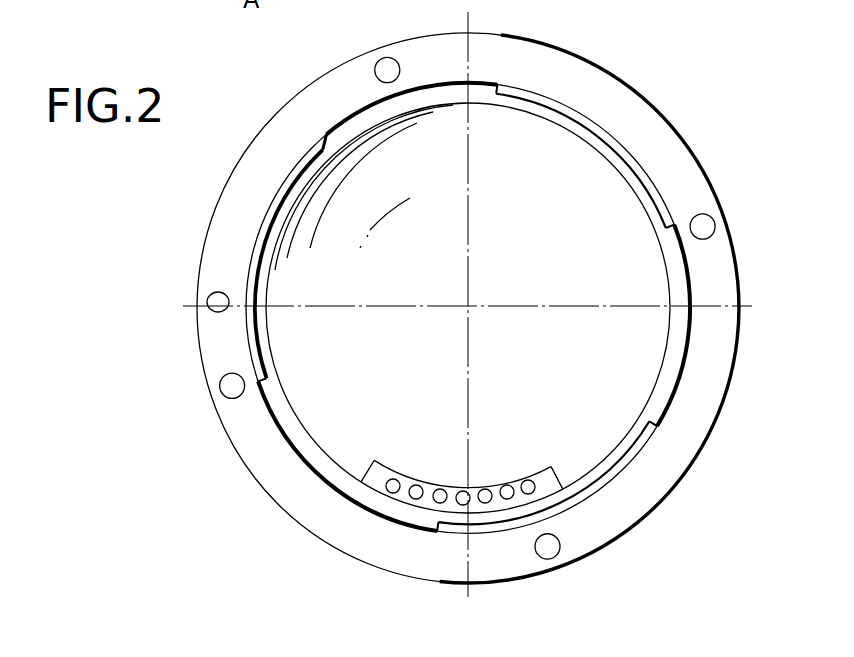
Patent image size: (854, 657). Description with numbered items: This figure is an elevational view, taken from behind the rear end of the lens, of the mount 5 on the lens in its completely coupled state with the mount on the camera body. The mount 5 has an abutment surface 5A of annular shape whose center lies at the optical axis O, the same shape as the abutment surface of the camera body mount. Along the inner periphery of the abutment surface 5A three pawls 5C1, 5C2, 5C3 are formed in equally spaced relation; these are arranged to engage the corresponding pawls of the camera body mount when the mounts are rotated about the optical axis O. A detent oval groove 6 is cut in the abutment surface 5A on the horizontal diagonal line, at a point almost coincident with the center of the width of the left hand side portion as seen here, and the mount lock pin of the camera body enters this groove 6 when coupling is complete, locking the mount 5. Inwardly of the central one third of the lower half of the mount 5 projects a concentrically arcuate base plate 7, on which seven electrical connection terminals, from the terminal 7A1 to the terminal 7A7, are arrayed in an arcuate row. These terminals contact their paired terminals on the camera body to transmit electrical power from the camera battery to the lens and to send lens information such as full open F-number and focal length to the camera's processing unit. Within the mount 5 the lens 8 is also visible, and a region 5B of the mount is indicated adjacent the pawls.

The mount on the lens 5 is at (585, 56).
The abutment surface 5A is at (640, 116).
The inner lip of mount 5B is at (666, 192).
The pawl 5C1 is at (441, 88).
The pawl 5C2 is at (412, 510).
The pawl 5C3 is at (692, 306).
The detent oval groove 6 is at (210, 312).
The arcuate base plate 7 is at (556, 483).
The electrical connection terminal 7A1 is at (528, 494).
The electrical connection terminal 7A7 is at (391, 493).
The lens 8 is at (343, 173).
The optical axis O is at (467, 304).